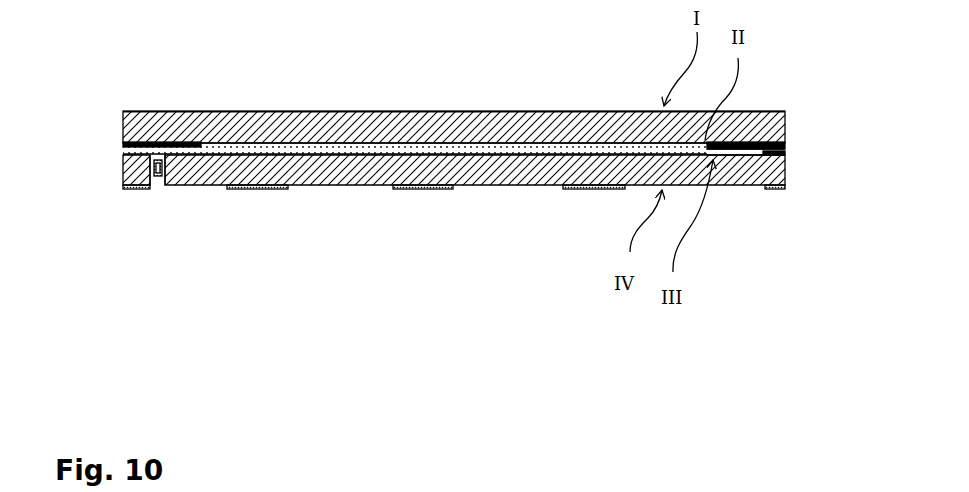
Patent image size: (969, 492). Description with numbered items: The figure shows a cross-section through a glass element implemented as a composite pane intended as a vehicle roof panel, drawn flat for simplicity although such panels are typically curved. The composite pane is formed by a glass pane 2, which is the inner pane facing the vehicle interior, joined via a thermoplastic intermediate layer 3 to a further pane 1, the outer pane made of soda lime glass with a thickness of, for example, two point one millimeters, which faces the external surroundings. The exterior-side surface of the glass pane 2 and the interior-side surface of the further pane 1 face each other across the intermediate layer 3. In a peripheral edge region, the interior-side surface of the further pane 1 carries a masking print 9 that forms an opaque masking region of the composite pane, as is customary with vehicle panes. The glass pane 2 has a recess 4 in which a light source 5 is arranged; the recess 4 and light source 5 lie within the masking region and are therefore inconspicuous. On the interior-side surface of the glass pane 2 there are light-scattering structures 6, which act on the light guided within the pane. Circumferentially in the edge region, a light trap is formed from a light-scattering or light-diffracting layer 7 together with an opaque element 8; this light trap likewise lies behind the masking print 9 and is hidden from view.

The further pane 1 is at (742, 121).
The glass pane 2 is at (740, 165).
The thermoplastic intermediate layer 3 is at (408, 147).
The recess 4 is at (150, 196).
The light source 5 is at (160, 178).
The light-scattering structures 6 is at (590, 189).
The light-scattering or light-diffracting layer 7 is at (123, 149).
The opaque element 8 is at (132, 188).
The masking print 9 is at (127, 110).